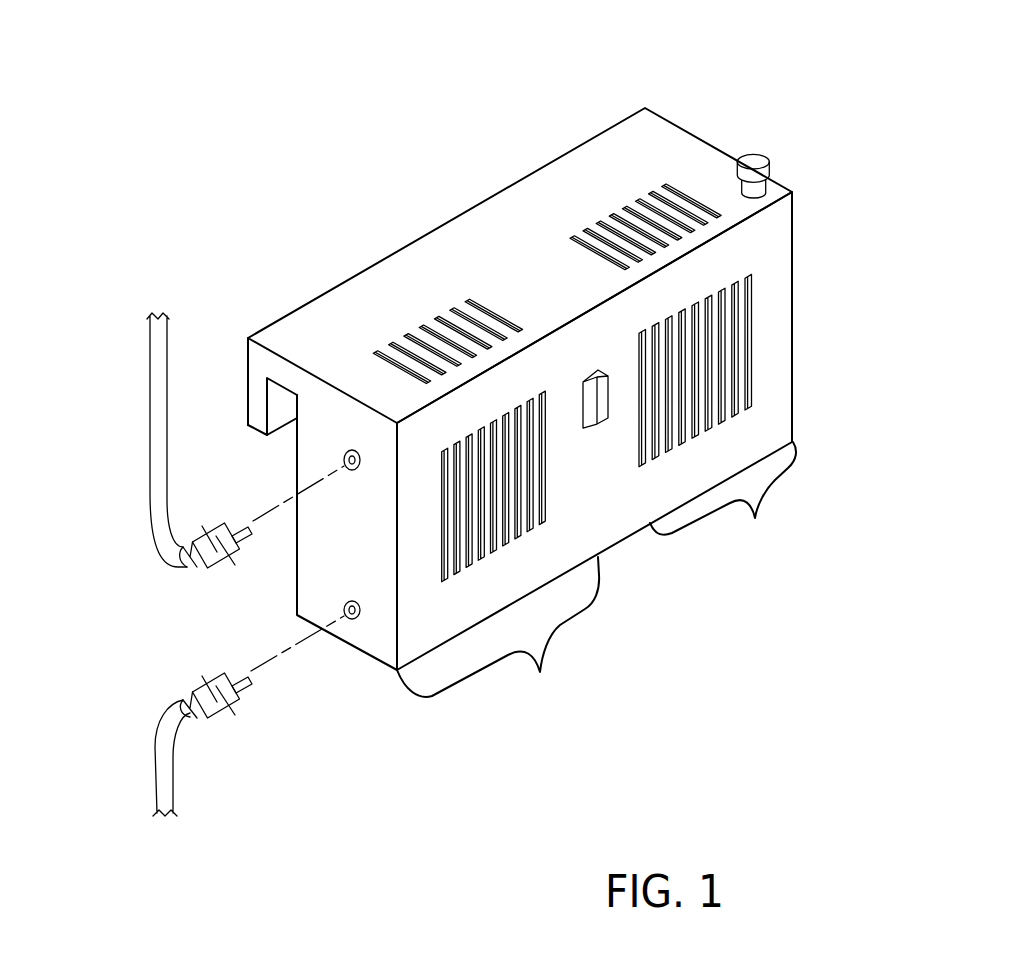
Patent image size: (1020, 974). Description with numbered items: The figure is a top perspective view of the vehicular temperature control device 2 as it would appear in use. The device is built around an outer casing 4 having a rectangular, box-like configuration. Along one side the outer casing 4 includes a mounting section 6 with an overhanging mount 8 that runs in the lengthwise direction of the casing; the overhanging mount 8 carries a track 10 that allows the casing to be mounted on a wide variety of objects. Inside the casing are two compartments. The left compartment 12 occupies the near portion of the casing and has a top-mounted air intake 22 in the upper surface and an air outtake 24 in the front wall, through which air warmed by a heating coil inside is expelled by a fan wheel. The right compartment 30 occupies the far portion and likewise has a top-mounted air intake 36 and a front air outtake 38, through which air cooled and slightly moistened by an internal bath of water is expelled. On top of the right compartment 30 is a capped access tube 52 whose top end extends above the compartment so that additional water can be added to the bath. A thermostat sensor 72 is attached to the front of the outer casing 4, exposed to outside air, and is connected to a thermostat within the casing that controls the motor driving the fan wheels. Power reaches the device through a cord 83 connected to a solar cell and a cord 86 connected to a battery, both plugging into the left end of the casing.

The vehicular temperature control device 2 is at (412, 120).
The outer casing 4 is at (495, 222).
The mounting section 6 is at (325, 317).
The overhanging mount 8 is at (252, 358).
The track 10 is at (266, 417).
The left compartment 12 is at (498, 640).
The air intake 22 is at (425, 327).
The air outtake 24 is at (468, 541).
The right compartment 30 is at (723, 504).
The air intake 36 is at (670, 213).
The air outtake 38 is at (738, 342).
The access tube 52 is at (757, 190).
The thermostat sensor 72 is at (597, 425).
The cord 83 is at (158, 455).
The cord 86 is at (172, 766).